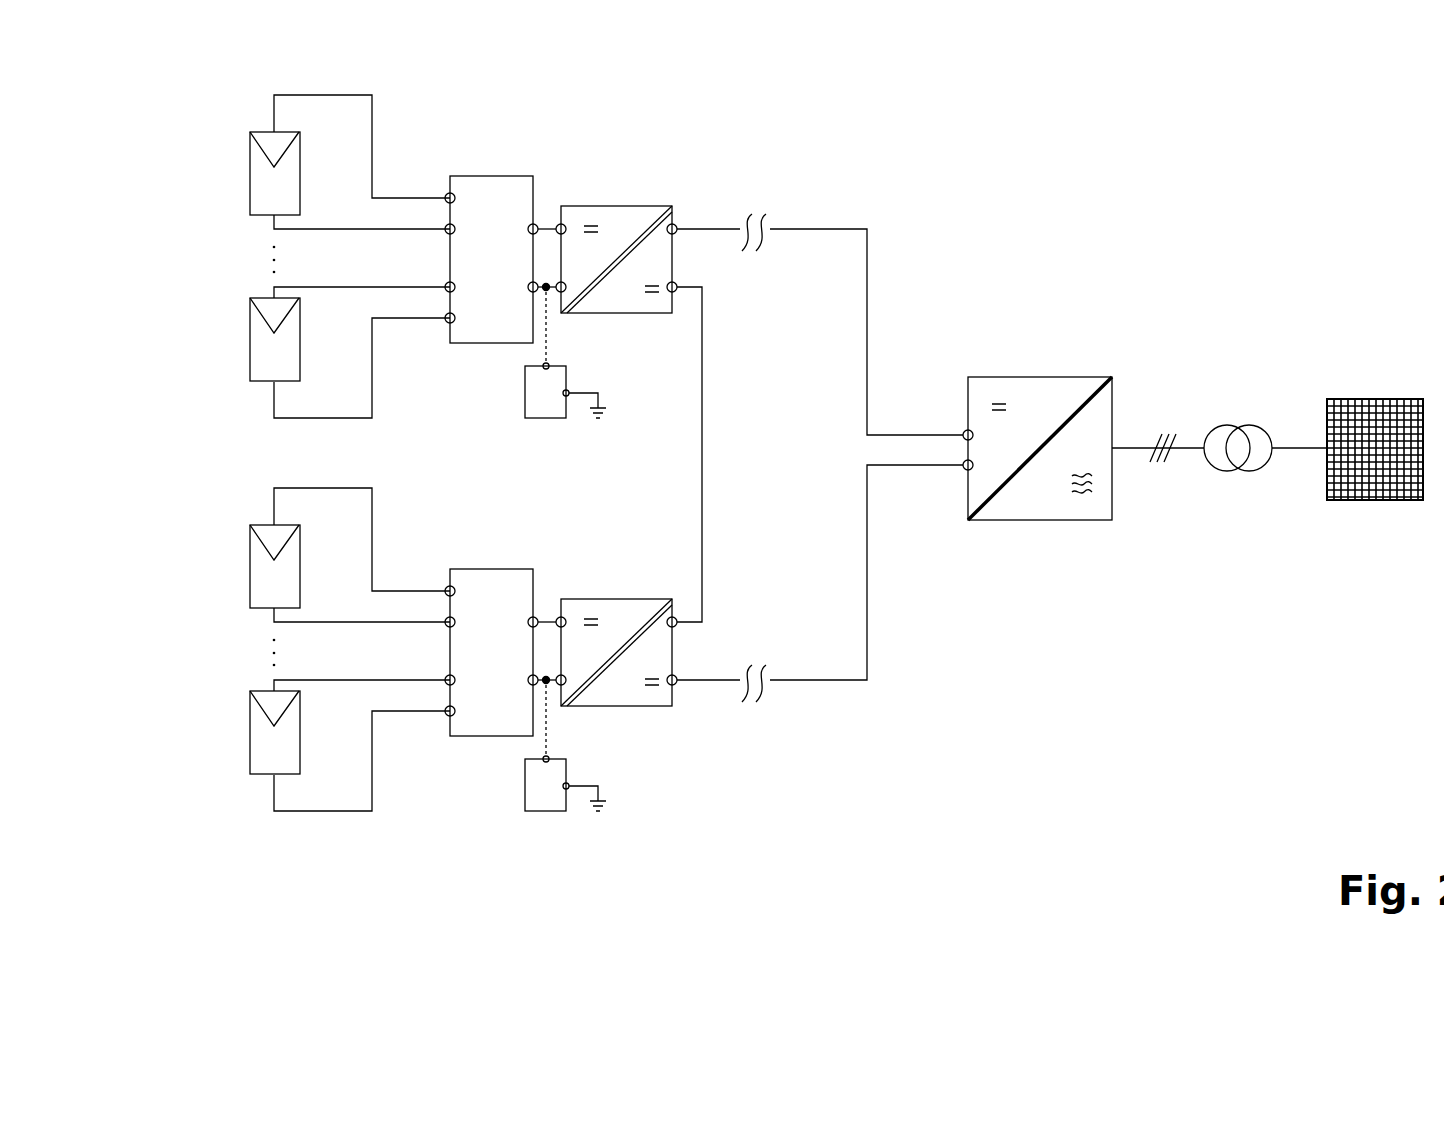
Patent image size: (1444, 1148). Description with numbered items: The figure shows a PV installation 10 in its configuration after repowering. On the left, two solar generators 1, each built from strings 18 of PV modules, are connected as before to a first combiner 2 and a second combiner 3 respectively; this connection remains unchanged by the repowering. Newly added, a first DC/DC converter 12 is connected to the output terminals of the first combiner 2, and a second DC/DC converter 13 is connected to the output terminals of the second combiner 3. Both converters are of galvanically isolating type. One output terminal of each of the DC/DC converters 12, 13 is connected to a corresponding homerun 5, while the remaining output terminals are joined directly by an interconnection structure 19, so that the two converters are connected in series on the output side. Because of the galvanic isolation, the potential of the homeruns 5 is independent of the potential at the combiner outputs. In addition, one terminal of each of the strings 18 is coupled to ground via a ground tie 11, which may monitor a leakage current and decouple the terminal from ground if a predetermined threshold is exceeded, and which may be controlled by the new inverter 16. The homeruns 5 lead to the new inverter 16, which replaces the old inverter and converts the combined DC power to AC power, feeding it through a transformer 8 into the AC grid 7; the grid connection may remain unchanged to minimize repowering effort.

The solar generator 1 is at (195, 197).
The string 18 is at (250, 145).
The first combiner 2 is at (506, 176).
The second combiner 3 is at (486, 568).
The first DC/DC converter 12 is at (633, 205).
The second DC/DC converter 13 is at (618, 598).
The ground tie 11 is at (545, 420).
The homerun 5 is at (833, 227).
The interconnection structure 19 is at (703, 432).
The new inverter 16 is at (1083, 377).
The transformer 8 is at (1248, 420).
The AC grid 7 is at (1383, 398).
The PV installation 10 is at (987, 652).